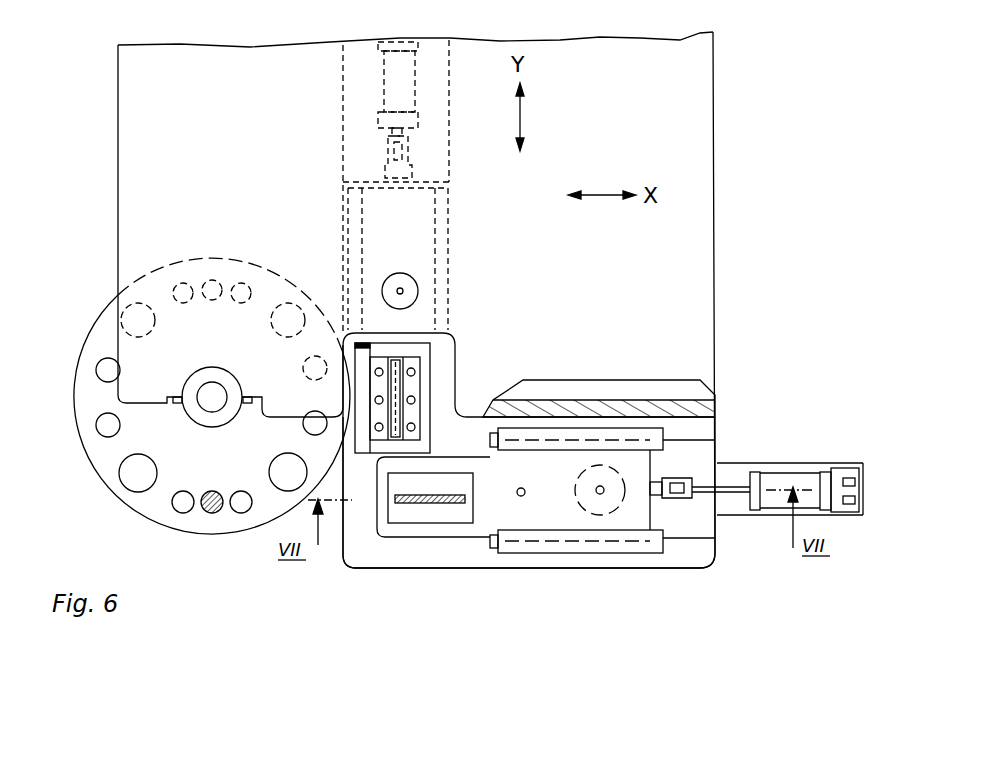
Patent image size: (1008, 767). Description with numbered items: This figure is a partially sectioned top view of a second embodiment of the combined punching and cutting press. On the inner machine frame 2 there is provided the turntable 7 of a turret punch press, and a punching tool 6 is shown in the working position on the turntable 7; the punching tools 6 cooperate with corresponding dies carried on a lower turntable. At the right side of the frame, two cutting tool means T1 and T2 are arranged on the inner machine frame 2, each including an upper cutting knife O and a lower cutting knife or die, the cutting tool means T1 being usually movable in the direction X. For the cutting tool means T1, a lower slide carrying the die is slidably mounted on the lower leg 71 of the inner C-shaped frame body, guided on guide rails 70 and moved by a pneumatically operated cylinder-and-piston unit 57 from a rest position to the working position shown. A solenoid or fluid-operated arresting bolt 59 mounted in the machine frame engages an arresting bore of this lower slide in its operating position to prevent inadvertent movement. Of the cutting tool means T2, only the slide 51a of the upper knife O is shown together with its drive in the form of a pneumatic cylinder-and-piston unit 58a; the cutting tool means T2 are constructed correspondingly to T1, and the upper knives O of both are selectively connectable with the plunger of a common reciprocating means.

The inner machine frame 2 is at (150, 105).
The turntable 7 is at (197, 377).
The punching tool 6 is at (211, 513).
The pneumatic cylinder-and-piston unit 58a is at (392, 80).
The slide 51a is at (430, 222).
The cutting tool means T2 is at (468, 321).
The upper cutting knife o is at (398, 391).
The lower leg 71 is at (698, 253).
The cutting tool means T1 is at (483, 578).
The arresting bolt 59 is at (617, 503).
The guide rails 70 is at (594, 562).
The cylinder-and-piston unit 57 is at (756, 442).